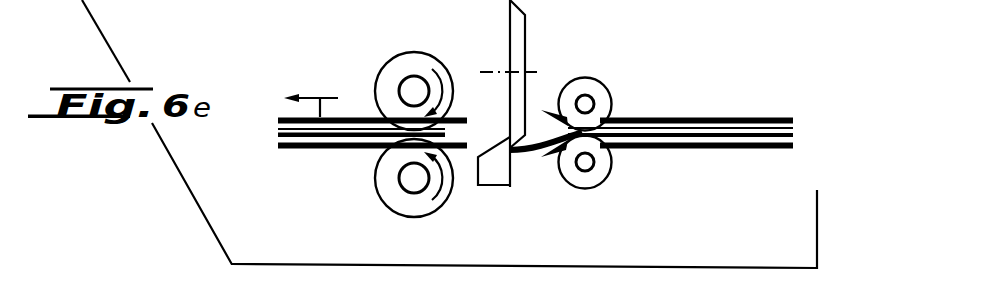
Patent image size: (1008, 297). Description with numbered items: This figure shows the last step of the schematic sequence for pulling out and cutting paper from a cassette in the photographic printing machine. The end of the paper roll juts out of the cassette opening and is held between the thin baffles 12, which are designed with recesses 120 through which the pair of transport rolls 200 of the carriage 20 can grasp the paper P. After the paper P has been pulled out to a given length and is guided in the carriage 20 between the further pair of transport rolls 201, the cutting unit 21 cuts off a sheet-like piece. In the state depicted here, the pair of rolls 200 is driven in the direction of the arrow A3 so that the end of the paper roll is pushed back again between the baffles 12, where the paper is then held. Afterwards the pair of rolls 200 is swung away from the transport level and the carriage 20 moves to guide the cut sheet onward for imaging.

The baffles 12 is at (282, 118).
The paper P is at (328, 150).
The recesses 120 is at (381, 148).
The pair of transport rolls 200 is at (396, 66).
The arrow A3 is at (449, 77).
The cutting unit 21 is at (527, 33).
The pair of transport rolls 201 is at (595, 86).
The carriage 20 is at (708, 101).